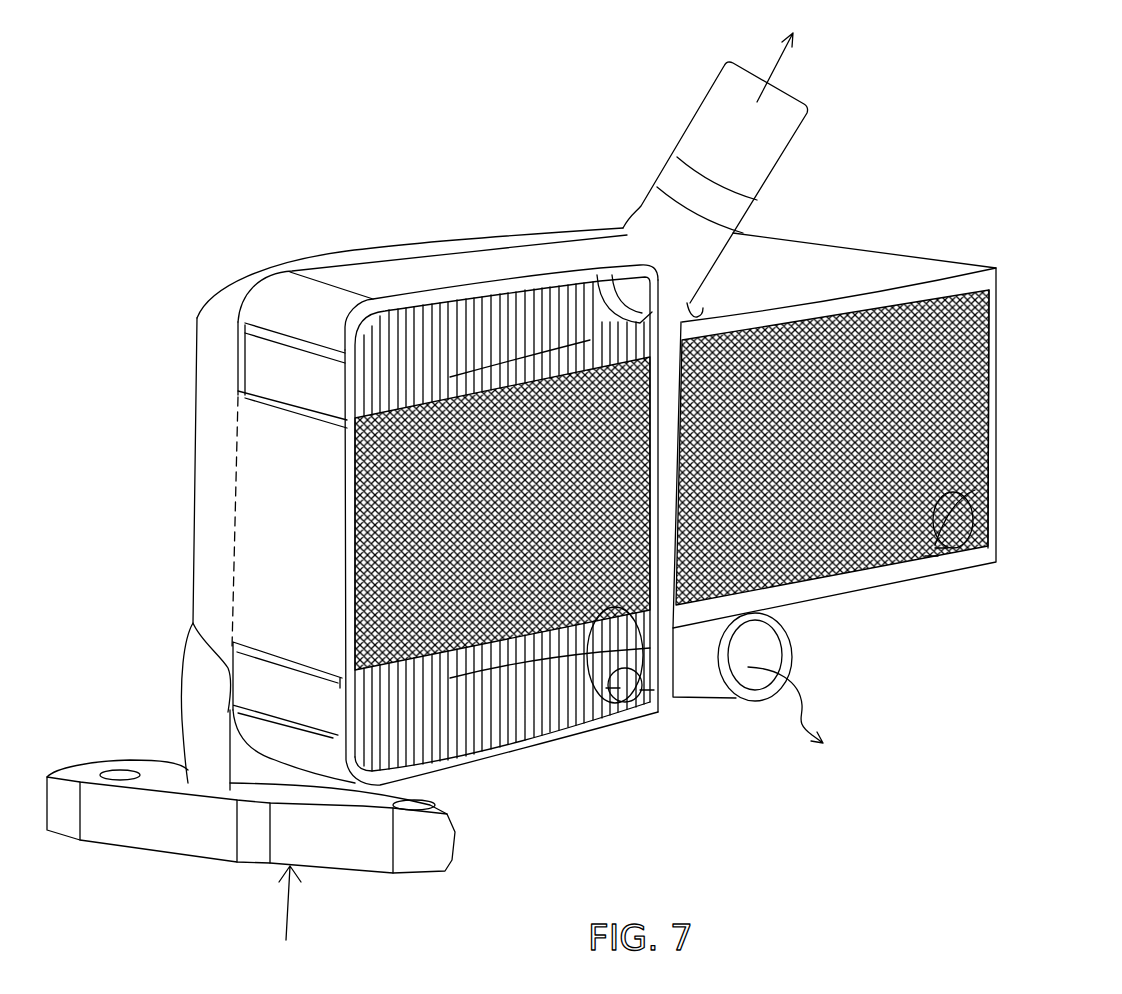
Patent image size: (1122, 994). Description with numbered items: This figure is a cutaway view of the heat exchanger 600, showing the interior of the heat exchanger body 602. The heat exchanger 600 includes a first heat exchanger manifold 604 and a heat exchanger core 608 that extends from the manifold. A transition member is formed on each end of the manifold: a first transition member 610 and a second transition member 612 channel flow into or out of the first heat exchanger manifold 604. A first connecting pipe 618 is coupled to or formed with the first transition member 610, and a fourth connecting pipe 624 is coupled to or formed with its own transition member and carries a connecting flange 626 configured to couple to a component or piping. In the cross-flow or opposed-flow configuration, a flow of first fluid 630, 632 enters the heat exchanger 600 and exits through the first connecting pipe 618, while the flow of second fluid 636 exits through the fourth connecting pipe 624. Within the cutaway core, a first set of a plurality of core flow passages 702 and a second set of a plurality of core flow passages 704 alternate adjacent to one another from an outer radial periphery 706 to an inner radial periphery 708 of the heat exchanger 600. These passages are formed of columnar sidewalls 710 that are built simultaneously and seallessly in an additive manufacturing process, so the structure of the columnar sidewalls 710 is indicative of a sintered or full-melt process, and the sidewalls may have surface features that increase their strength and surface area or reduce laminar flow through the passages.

The heat exchanger 600 is at (562, 85).
The heat exchanger body 602 is at (838, 245).
The first heat exchanger manifold 604 is at (313, 558).
The heat exchanger core 608 is at (212, 398).
The first transition member 610 is at (380, 277).
The second transition member 612 is at (540, 752).
The first connecting pipe 618 is at (656, 203).
The fourth connecting pipe 624 is at (792, 634).
The connecting flange 626 is at (180, 843).
The flow of first fluid 630 is at (288, 912).
The flow of first fluid 632 is at (782, 64).
The flow of second fluid 636 is at (797, 722).
The first set of plurality of core flow passages 702 is at (647, 692).
The second set of plurality of core flow passages 704 is at (613, 700).
The outer radial periphery 706 is at (347, 450).
The inner radial periphery 708 is at (700, 305).
The columnar sidewalls 710 is at (632, 572).